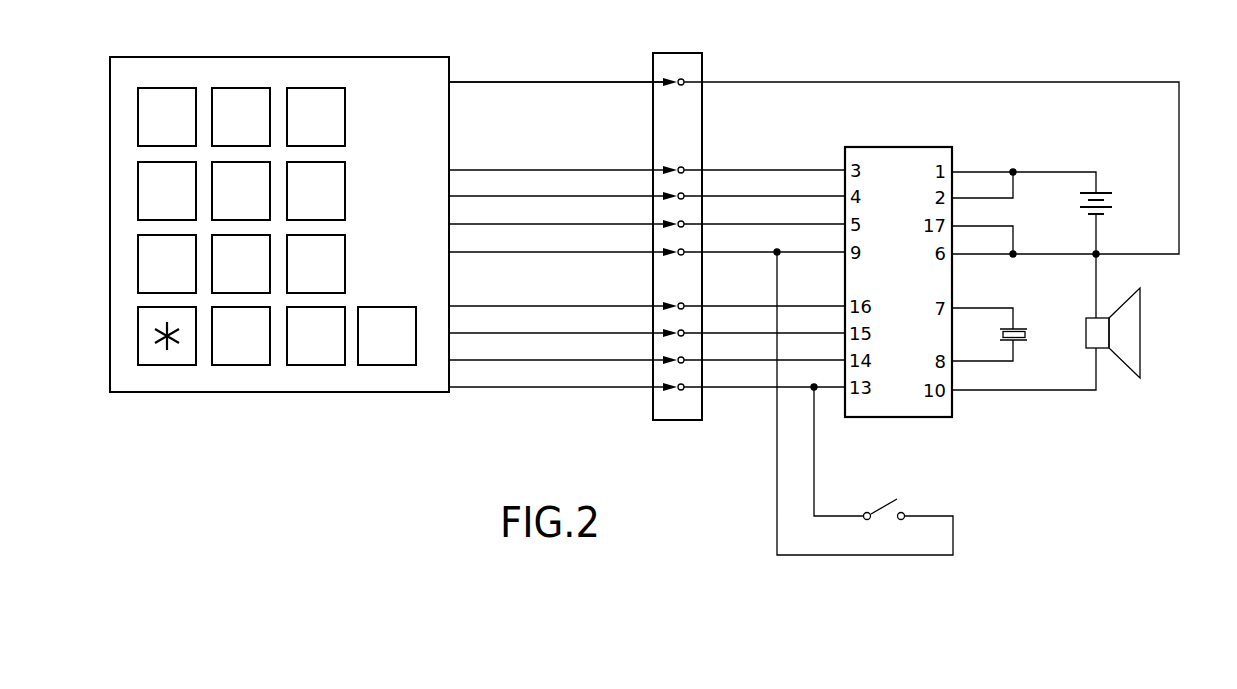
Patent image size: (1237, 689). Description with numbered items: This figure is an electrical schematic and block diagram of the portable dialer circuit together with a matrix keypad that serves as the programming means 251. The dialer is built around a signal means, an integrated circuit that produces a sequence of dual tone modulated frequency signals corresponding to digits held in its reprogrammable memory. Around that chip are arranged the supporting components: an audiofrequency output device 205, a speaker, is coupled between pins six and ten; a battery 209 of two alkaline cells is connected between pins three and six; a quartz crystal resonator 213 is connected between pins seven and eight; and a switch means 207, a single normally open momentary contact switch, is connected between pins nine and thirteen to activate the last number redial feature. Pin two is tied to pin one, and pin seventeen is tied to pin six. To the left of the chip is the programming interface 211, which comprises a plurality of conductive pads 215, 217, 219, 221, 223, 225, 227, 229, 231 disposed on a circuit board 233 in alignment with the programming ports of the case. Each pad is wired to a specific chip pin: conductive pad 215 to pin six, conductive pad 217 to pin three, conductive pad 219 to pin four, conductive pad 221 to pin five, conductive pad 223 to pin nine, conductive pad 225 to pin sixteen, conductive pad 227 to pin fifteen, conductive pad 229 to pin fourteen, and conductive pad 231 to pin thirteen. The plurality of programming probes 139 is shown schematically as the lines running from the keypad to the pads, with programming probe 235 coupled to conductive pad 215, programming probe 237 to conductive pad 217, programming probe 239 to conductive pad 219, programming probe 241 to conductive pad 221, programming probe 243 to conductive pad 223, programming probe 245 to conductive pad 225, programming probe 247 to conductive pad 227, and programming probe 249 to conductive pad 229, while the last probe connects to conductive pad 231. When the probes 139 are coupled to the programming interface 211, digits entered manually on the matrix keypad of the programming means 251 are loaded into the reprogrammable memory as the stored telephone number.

The programming means 251 is at (262, 62).
The programming probes 139 is at (568, 68).
The programming probe 235 is at (528, 81).
The programming probe 237 is at (528, 169).
The programming probe 239 is at (528, 195).
The programming probe 241 is at (528, 223).
The programming probe 243 is at (528, 251).
The programming probe 245 is at (528, 305).
The programming probe 247 is at (528, 332).
The programming probe 249 is at (528, 359).
The programming interface 211 is at (698, 44).
The circuit board 233 is at (685, 132).
The conductive pad 215 is at (685, 78).
The conductive pad 217 is at (685, 167).
The conductive pad 219 is at (685, 193).
The conductive pad 221 is at (685, 221).
The conductive pad 223 is at (685, 249).
The conductive pad 225 is at (685, 303).
The conductive pad 227 is at (685, 330).
The conductive pad 229 is at (685, 357).
The conductive pad 231 is at (685, 384).
The battery 209 is at (1102, 190).
The quartz crystal resonator 213 is at (1020, 326).
The audiofrequency output device 205 is at (1142, 335).
The switch means 207 is at (900, 500).